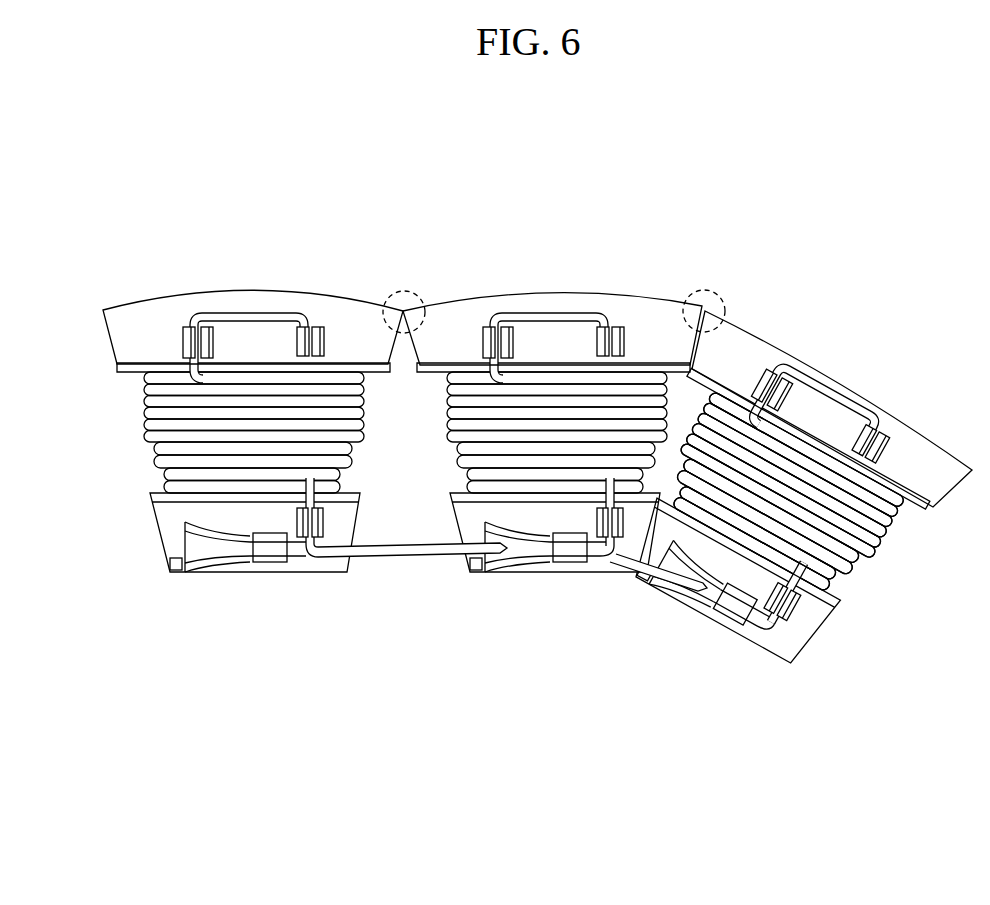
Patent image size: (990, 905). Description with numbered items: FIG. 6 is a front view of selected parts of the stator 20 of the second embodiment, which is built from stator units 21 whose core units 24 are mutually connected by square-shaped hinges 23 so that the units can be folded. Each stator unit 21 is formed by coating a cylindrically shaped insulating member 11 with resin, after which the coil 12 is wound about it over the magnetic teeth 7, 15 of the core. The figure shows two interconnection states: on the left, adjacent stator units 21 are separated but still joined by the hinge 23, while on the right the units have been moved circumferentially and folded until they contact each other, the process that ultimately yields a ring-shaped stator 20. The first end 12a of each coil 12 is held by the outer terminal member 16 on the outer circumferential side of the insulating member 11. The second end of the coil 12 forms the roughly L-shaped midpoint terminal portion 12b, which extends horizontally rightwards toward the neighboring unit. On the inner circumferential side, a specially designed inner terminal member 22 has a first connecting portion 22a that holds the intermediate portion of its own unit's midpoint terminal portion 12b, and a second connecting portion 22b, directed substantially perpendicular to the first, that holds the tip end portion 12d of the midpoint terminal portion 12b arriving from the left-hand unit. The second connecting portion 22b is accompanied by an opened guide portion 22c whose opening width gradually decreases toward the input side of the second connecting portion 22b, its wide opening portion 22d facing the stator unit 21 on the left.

The magnetic teeth 7 is at (207, 429).
The insulating member 11 is at (143, 362).
The coil 12 is at (501, 550).
The first end of the coil 12a is at (200, 327).
The midpoint terminal portion 12b is at (368, 578).
The tip end portion 12d is at (473, 575).
The magnetic teeth 15 is at (890, 548).
The outer terminal member 16 is at (242, 313).
The stator 20 is at (534, 429).
The stator unit 21 is at (534, 456).
The inner terminal member 22 is at (486, 593).
The first connecting portion 22a is at (325, 522).
The second connecting portion 22b is at (264, 563).
The guide portion 22c is at (212, 565).
The wide opening portion 22d is at (183, 560).
The hinge 23 is at (404, 291).
The core unit 24 is at (288, 303).